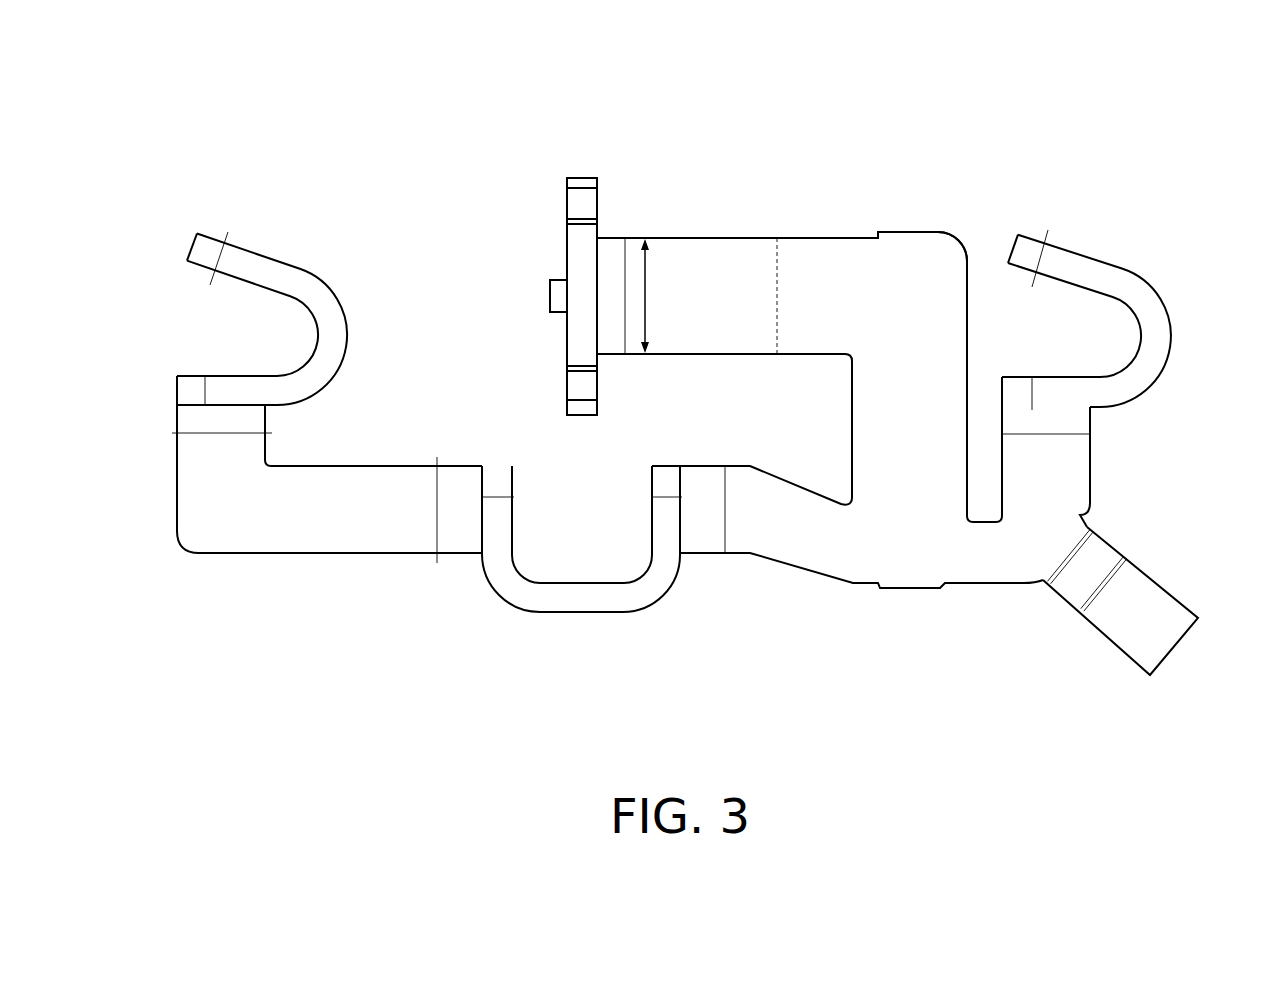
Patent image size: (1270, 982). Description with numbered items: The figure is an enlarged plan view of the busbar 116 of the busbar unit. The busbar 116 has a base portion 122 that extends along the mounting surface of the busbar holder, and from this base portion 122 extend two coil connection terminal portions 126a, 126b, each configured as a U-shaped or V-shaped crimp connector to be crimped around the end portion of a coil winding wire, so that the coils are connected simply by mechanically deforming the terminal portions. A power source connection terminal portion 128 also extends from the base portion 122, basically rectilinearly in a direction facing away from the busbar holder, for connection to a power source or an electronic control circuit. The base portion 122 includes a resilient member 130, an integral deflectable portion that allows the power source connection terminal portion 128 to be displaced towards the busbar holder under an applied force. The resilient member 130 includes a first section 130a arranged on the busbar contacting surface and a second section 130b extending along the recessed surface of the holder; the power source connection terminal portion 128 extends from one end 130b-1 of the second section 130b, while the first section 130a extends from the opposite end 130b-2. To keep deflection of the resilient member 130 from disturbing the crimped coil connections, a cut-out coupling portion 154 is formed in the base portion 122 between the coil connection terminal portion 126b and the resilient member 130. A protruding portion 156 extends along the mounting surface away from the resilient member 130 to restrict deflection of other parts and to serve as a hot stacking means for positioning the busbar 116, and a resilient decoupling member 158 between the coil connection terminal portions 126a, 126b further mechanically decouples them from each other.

The busbar 116 is at (1089, 126).
The base portion 122 is at (837, 307).
The coil connection terminal portion 126a is at (205, 236).
The coil connection terminal portion 126b is at (1103, 290).
The power source connection terminal portion 128 is at (573, 350).
The resilient member 130 is at (765, 144).
The first section 130a is at (807, 263).
The second section 130b is at (683, 250).
The end of the second section 130b-1 is at (611, 215).
The opposite end of the second section 130b-2 is at (781, 220).
The cut-out coupling portion 154 is at (987, 512).
The protruding portion 156 is at (1172, 617).
The resilient decoupling member 158 is at (630, 598).